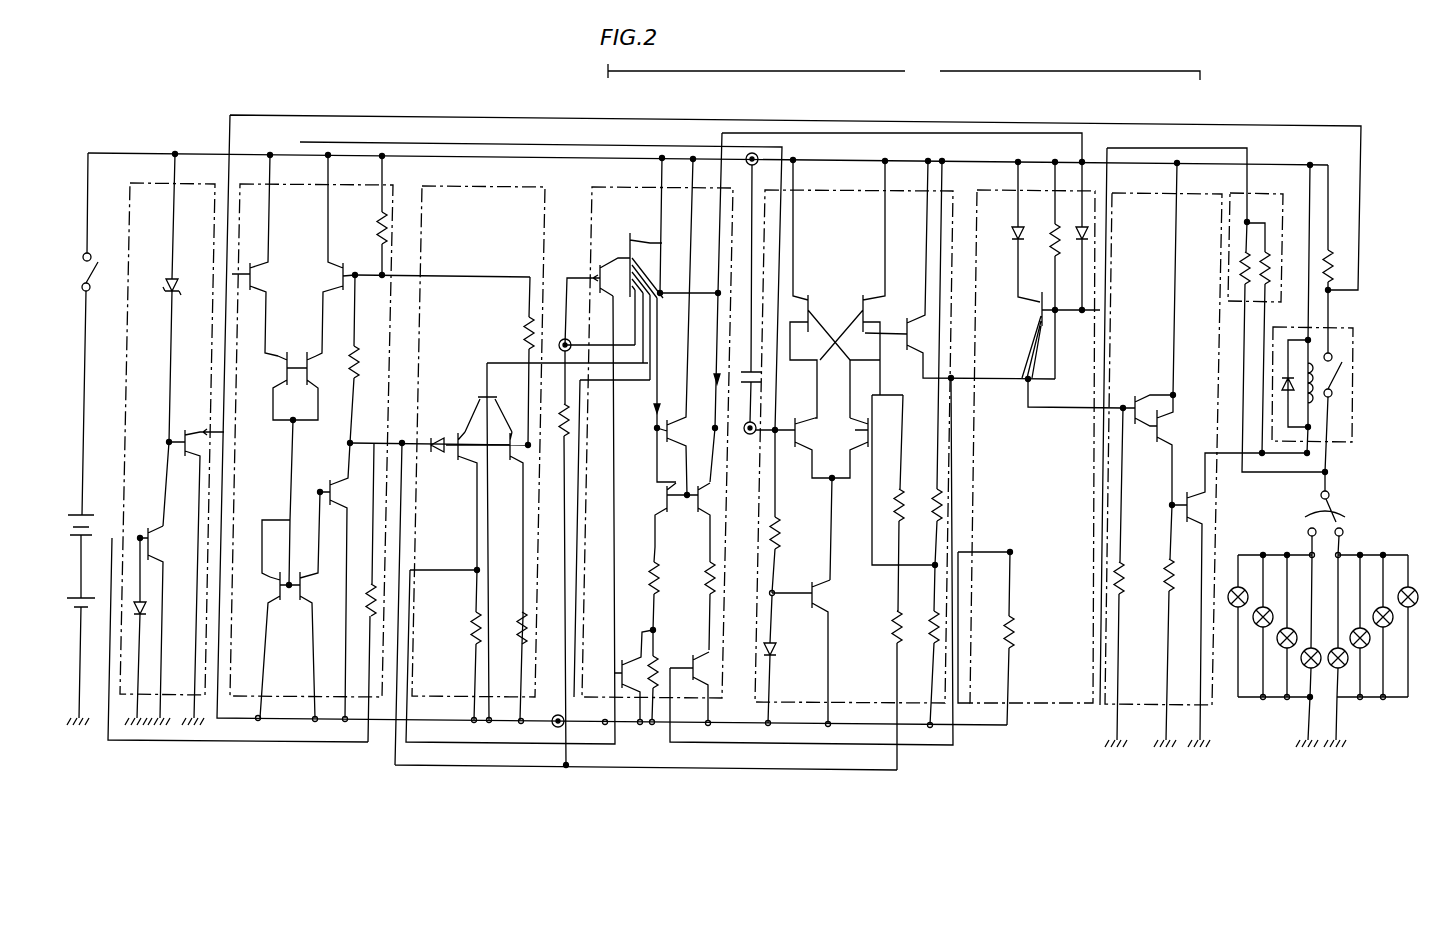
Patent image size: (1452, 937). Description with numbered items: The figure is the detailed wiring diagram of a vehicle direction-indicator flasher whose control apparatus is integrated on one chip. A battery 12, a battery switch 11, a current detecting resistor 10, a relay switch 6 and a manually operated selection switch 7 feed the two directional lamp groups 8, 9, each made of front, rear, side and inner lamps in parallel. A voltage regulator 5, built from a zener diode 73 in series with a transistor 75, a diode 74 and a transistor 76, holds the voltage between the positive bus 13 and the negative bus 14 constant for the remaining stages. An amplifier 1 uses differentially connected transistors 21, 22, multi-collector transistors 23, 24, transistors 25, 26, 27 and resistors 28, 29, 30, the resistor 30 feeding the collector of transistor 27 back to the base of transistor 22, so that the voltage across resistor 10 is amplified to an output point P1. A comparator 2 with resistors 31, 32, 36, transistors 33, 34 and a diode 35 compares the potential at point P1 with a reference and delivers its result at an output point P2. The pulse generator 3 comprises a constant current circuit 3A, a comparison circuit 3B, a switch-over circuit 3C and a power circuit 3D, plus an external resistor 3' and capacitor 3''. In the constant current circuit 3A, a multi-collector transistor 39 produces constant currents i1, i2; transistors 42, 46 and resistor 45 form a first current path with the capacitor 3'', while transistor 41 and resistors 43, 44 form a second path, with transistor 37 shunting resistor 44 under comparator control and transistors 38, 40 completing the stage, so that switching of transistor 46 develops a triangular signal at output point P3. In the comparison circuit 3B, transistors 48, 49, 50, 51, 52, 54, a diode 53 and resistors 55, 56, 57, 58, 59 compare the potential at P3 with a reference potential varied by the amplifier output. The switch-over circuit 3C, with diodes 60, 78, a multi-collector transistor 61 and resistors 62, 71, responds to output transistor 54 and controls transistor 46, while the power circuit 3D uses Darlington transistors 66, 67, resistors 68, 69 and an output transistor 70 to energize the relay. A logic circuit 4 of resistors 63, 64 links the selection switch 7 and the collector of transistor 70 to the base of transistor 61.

The amplifier 1 is at (340, 192).
The comparator 2 is at (462, 188).
The pulse generator 3 is at (904, 72).
The constant current circuit 3A is at (648, 180).
The comparison circuit 3B is at (848, 182).
The switch-over circuit 3C is at (1010, 182).
The power circuit 3D is at (1152, 190).
The resistor 3' is at (646, 554).
The capacitor 3'' is at (771, 293).
The logic circuit 4 is at (1258, 194).
The voltage regulator 5 is at (196, 192).
The relay switch 6 is at (1354, 353).
The selection switch 7 is at (1336, 504).
The directional lamp group 8 is at (1280, 698).
The directional lamp group 9 is at (1360, 698).
The current detecting resistor 10 is at (1338, 248).
The battery switch 11 is at (122, 282).
The battery 12 is at (94, 528).
The positive bus 13 is at (146, 153).
The negative bus 14 is at (240, 742).
The transistor 21 is at (260, 268).
The transistor 22 is at (343, 266).
The multi-collector transistor 23 is at (276, 381).
The multi-collector transistor 24 is at (308, 381).
The transistor 25 is at (268, 603).
The transistor 26 is at (312, 596).
The transistor 27 is at (332, 504).
The resistor 28 is at (374, 222).
The resistor 29 is at (359, 582).
The resistor 30 is at (346, 344).
The resistor 31 is at (522, 332).
The resistor 32 is at (506, 616).
The transistor 33 is at (460, 462).
The transistor 34 is at (512, 462).
The diode 35 is at (432, 428).
The resistor 36 is at (468, 630).
The transistor 37 is at (630, 654).
The transistor 38 is at (608, 252).
The multi-collector transistor 39 is at (656, 248).
The transistor 40 is at (678, 416).
The transistor 41 is at (656, 500).
The transistor 42 is at (698, 514).
The resistor 43 is at (650, 578).
The resistor 44 is at (660, 632).
The resistor 45 is at (704, 580).
The transistor 46 is at (690, 648).
The transistor 48 is at (794, 298).
The multi-collector transistor 49 is at (880, 298).
The transistor 50 is at (804, 454).
The transistor 51 is at (868, 454).
The transistor 52 is at (830, 568).
The diode 53 is at (774, 652).
The output transistor 54 is at (908, 324).
The resistor 55 is at (782, 526).
The resistor 56 is at (934, 544).
The resistor 57 is at (932, 612).
The resistor 58 is at (920, 480).
The resistor 59 is at (890, 611).
The diode 60 is at (1012, 244).
The multi-collector transistor 61 is at (1020, 322).
The resistor 62 is at (1052, 240).
The resistor 63 is at (1238, 260).
The resistor 64 is at (1276, 246).
The transistor 66 is at (1148, 392).
The transistor 67 is at (1174, 418).
The resistor 68 is at (1130, 560).
The resistor 69 is at (1172, 560).
The output transistor 70 is at (1190, 488).
The resistor 71 is at (1014, 626).
The zener diode 73 is at (170, 292).
The diode 74 is at (150, 632).
The transistor 75 is at (160, 526).
The transistor 76 is at (200, 425).
The diode 78 is at (1098, 240).
The output point P1 is at (404, 432).
The output point P2 is at (510, 520).
The output point P3 is at (754, 445).
The constant current i1 is at (642, 408).
The constant current i2 is at (708, 307).